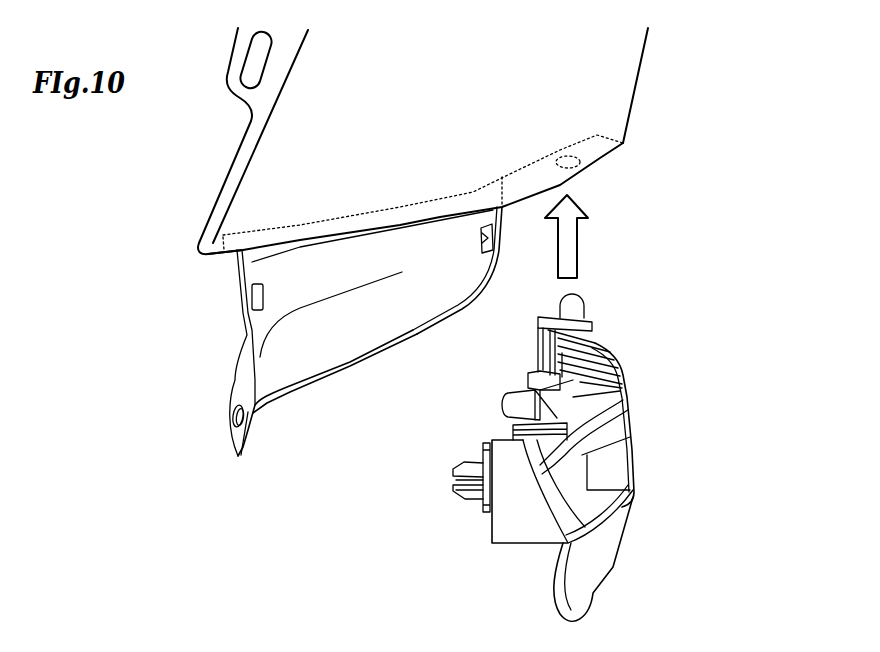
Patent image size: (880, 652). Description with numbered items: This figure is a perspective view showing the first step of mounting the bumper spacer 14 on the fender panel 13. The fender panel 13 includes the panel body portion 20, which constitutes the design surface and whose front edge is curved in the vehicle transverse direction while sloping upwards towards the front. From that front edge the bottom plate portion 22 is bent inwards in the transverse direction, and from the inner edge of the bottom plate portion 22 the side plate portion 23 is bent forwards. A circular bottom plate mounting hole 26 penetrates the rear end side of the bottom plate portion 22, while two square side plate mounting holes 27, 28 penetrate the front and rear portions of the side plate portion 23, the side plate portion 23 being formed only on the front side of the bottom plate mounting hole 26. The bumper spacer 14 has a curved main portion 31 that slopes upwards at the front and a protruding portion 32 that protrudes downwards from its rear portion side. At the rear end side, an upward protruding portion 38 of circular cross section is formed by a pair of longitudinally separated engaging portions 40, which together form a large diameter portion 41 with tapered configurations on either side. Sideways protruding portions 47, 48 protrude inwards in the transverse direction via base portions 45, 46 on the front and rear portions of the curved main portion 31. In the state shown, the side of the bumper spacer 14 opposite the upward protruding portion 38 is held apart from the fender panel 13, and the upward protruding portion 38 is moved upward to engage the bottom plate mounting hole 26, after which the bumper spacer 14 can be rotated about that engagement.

The fender panel 13 is at (656, 74).
The panel body portion 20 is at (615, 110).
The bottom plate portion 22 is at (512, 173).
The bottom plate mounting hole 26 is at (568, 156).
The side plate mounting hole 27 is at (253, 323).
The side plate mounting hole 28 is at (481, 240).
The side plate portion 23 is at (323, 357).
The bumper spacer 14 is at (637, 430).
The upward protruding portion 38 is at (593, 285).
The engaging portion 40 is at (560, 301).
The large diameter portion 41 is at (592, 297).
The base portion 46 is at (540, 372).
The sideways protruding portion 48 is at (507, 405).
The base portion 45 is at (482, 458).
The sideways protruding portion 47 is at (447, 482).
The curved main portion 31 is at (522, 537).
The protruding portion 32 is at (567, 598).